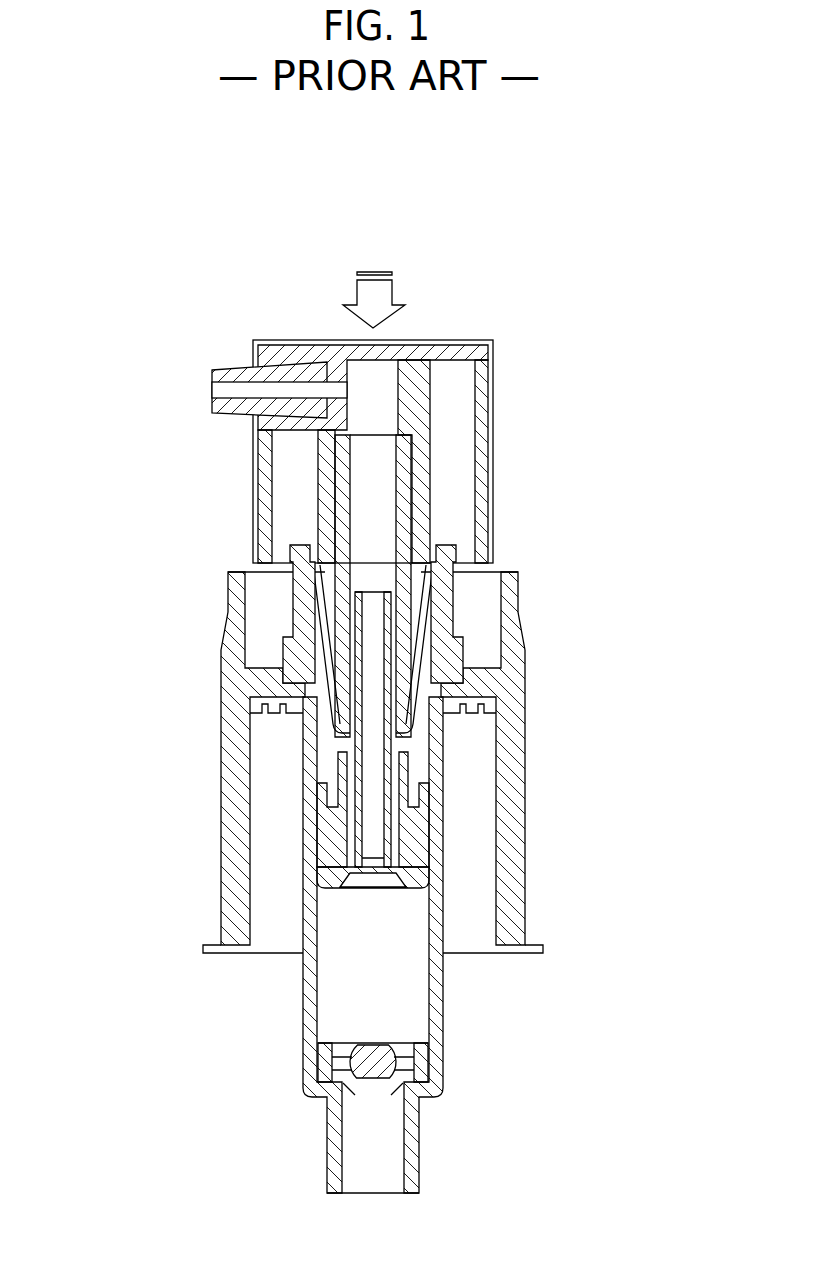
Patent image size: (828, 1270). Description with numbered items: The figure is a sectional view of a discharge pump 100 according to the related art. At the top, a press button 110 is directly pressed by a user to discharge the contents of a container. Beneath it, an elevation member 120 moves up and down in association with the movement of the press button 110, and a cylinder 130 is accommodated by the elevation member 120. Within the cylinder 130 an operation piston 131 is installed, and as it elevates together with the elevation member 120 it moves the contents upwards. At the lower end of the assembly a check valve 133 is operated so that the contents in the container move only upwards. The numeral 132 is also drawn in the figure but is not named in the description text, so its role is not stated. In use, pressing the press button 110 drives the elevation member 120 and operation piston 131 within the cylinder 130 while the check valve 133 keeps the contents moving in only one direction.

The discharge pump 100 is at (528, 338).
The press button 110 is at (298, 342).
The elevation member 120 is at (347, 507).
The cylinder 130 is at (452, 913).
The operation piston 131 is at (387, 783).
The cylinder 132 is at (345, 940).
The check valve 133 is at (393, 1043).